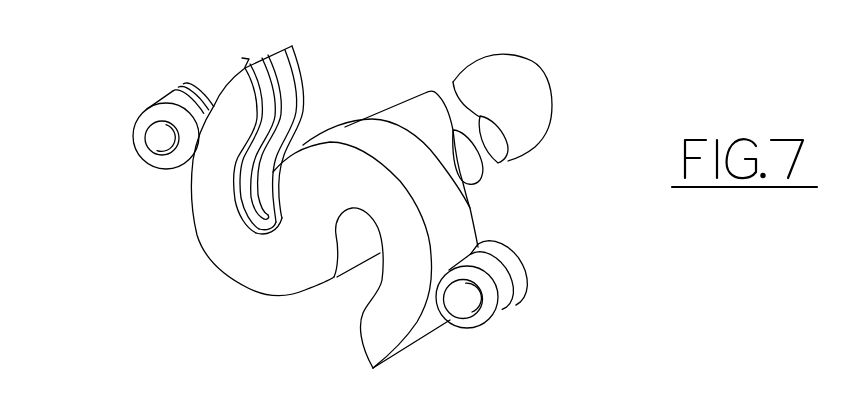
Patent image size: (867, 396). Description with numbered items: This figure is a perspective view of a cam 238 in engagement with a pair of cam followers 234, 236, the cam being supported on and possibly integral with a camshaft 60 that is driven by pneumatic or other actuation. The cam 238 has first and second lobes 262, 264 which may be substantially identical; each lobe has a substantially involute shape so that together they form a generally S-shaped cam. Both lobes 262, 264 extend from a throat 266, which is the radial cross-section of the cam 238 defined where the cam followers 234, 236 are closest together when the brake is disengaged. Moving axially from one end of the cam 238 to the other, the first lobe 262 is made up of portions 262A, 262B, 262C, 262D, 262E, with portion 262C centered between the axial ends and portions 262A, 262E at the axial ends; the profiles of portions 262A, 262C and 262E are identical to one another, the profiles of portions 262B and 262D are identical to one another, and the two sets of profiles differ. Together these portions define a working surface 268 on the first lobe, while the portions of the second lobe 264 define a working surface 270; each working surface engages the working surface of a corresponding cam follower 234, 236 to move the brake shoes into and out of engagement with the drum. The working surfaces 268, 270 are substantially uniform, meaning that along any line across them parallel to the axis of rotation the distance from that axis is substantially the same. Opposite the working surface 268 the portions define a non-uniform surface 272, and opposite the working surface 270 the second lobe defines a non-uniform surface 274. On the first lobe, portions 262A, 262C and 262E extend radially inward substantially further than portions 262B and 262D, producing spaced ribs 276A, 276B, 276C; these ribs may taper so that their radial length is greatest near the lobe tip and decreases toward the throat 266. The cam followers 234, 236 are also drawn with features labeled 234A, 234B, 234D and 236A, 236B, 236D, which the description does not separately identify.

The camshaft 60 is at (528, 73).
The cam follower 234 is at (145, 100).
The connector bore 234A is at (157, 135).
The connector flange 234B is at (160, 100).
The connector cylindrical portion 234D is at (193, 85).
The cam follower 236 is at (551, 271).
The connector bore 236A is at (472, 311).
The connector flange 236B is at (503, 280).
The connector cylindrical portion 236D is at (507, 252).
The cam 238 is at (520, 181).
The first lobe 262 is at (239, 136).
The lobe portion 262A is at (258, 95).
The lobe portion 262B is at (262, 78).
The lobe portion 262C is at (275, 60).
The lobe portion 262D is at (282, 50).
The lobe portion 262E is at (300, 42).
The second lobe 264 is at (388, 340).
The throat 266 is at (310, 220).
The working surface 268 is at (228, 66).
The working surface 270 is at (425, 333).
The non-uniform surface 272 is at (272, 130).
The non-uniform surface 274 is at (372, 298).
The rib 276A is at (240, 221).
The rib 276B is at (247, 218).
The rib 276C is at (262, 155).